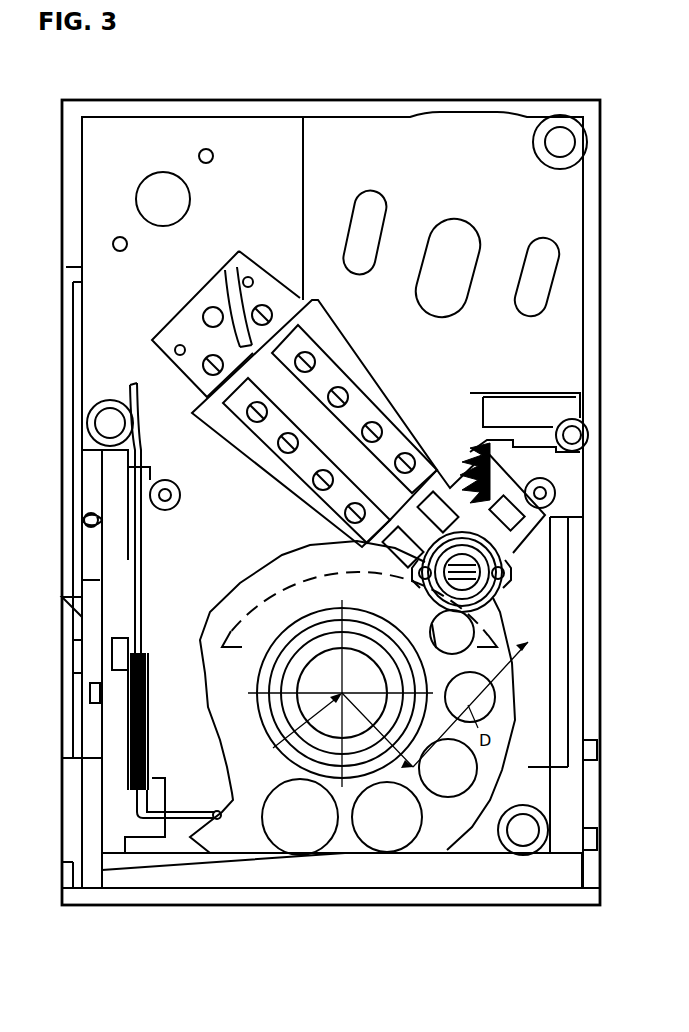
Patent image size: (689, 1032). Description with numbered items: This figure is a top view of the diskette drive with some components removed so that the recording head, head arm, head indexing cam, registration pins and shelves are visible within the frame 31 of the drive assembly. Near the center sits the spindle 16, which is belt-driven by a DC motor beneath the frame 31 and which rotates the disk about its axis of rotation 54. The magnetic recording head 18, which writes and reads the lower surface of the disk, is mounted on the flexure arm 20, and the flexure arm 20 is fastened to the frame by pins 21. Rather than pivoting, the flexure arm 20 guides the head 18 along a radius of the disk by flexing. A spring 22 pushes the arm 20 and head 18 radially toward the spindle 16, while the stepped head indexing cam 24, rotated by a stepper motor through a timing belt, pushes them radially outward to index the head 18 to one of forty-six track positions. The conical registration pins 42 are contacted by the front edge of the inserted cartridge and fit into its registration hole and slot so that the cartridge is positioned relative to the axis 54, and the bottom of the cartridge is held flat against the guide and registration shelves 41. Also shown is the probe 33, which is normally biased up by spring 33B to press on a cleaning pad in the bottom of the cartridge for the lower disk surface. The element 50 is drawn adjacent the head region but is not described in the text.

The spindle 16 is at (290, 679).
The magnetic recording head 18 is at (455, 565).
The flexure arm 20 is at (447, 490).
The pins 21 is at (244, 283).
The spring 22 is at (485, 478).
The head indexing cam 24 is at (503, 684).
The frame 31 is at (168, 627).
The probe 33 is at (139, 574).
The spring 33B is at (147, 735).
The guide and registration shelves 41 is at (110, 815).
The conical registration pins 42 is at (177, 505).
The hub bearing 50 is at (470, 583).
The axis of rotation 54 is at (389, 705).